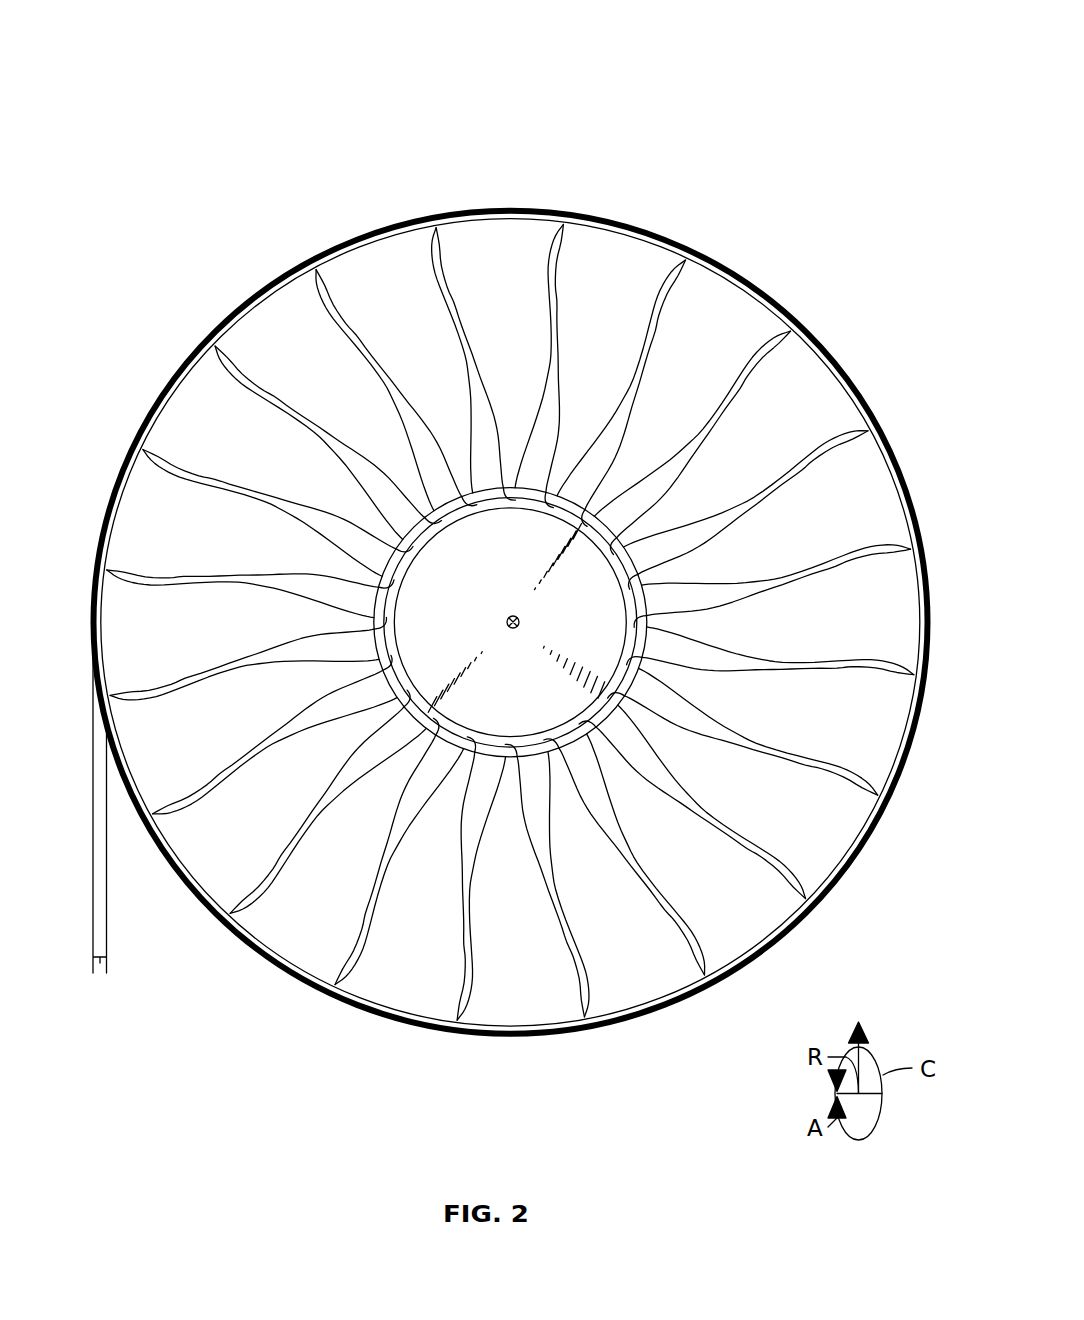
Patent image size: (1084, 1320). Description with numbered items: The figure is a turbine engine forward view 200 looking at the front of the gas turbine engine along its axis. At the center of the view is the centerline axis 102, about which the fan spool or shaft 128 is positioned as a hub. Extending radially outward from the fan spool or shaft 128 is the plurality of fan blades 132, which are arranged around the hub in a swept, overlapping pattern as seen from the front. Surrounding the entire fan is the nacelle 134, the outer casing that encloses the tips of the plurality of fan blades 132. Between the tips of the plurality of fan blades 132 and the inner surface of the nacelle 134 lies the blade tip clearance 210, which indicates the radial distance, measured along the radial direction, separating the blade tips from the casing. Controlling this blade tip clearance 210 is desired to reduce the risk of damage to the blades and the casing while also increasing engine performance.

The turbine engine forward view 200 is at (663, 52).
The nacelle 134 is at (241, 298).
The plurality of fan blades 132 is at (710, 323).
The fan spool or shaft 128 is at (578, 607).
The centerline axis 102 is at (510, 617).
The blade tip clearance 210 is at (100, 963).